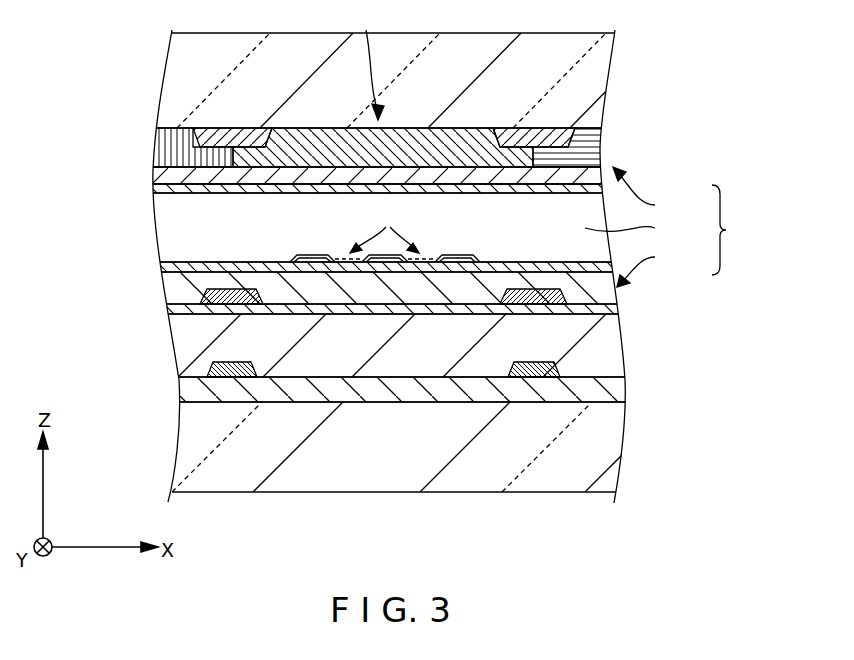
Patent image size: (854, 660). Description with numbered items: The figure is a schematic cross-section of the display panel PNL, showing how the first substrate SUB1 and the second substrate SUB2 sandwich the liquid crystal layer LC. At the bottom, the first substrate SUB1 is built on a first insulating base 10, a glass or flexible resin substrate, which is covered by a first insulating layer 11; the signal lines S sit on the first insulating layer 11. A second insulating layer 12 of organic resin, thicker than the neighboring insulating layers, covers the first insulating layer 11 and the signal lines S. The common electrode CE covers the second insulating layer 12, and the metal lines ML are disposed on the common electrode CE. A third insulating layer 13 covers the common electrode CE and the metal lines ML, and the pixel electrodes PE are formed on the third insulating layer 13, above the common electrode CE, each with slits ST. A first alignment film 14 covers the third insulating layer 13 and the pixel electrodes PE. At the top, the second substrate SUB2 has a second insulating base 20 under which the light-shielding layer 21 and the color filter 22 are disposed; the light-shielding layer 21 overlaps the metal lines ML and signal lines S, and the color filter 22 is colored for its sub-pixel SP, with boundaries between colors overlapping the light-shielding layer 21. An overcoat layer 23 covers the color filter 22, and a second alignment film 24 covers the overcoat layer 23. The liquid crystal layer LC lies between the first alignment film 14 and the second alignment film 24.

The first insulating base 10 is at (185, 440).
The first insulating layer 11 is at (185, 393).
The second insulating layer 12 is at (184, 339).
The third insulating layer 13 is at (182, 288).
The first alignment film 14 is at (180, 264).
The second insulating base 20 is at (178, 95).
The light-shielding layer 21 is at (241, 138).
The color filter 22 is at (178, 153).
The overcoat layer 23 is at (178, 180).
The second alignment film 24 is at (178, 194).
The sub-pixel SP is at (368, 63).
The pixel electrode PE is at (324, 255).
The slit ST is at (384, 228).
The metal line ML is at (233, 292).
The common electrode CE is at (432, 314).
The signal line S is at (248, 363).
The first substrate SUB1 is at (662, 269).
The second substrate SUB2 is at (660, 193).
The liquid crystal layer LC is at (633, 236).
The display panel PNL is at (743, 230).